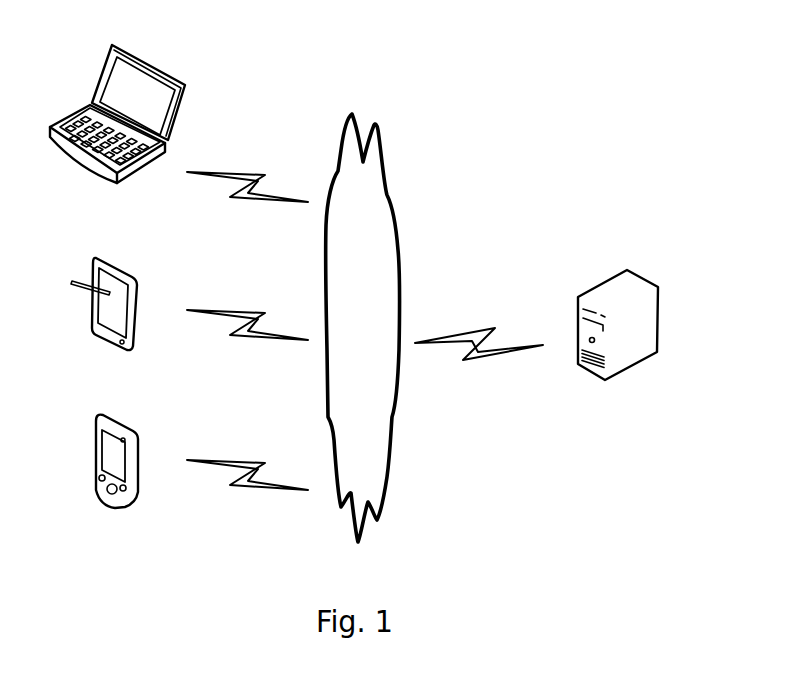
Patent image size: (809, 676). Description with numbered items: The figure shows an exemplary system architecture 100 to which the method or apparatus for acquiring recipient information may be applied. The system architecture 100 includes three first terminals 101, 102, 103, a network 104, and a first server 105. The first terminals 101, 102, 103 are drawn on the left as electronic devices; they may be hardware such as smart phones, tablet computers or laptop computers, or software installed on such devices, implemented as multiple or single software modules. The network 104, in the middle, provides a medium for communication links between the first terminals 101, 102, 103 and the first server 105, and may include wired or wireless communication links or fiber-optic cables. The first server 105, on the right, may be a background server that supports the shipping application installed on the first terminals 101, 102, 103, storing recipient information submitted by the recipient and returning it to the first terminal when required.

The system architecture 100 is at (575, 38).
The first terminal 101 is at (116, 477).
The first terminal 102 is at (104, 322).
The first terminal 103 is at (117, 129).
The network 104 is at (363, 328).
The first server 105 is at (618, 341).